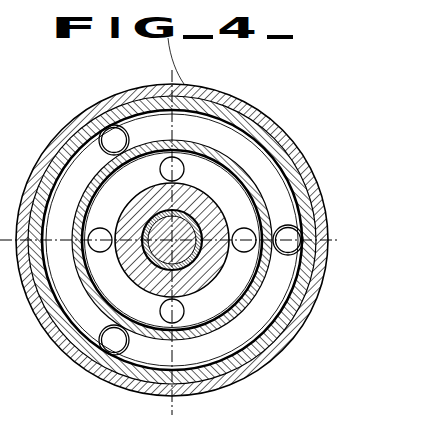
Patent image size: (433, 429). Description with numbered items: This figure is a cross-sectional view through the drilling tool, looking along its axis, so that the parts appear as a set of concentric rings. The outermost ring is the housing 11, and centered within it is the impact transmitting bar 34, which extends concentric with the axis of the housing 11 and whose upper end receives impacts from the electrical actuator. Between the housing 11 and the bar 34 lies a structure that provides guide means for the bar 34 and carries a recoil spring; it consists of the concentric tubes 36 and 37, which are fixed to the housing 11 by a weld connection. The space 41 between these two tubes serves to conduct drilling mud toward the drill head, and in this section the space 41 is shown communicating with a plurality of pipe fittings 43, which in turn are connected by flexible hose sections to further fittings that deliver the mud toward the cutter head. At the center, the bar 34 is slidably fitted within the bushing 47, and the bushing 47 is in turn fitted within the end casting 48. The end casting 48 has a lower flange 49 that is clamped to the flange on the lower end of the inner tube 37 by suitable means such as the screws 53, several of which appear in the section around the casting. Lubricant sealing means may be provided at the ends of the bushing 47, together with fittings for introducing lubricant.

The housing 11 is at (263, 123).
The impact transmitting bar 34 is at (163, 220).
The tube 36 is at (302, 200).
The tube 37 is at (263, 287).
The space 41 is at (293, 263).
The pipe fittings 43 is at (295, 237).
The bushing 47 is at (187, 267).
The end casting 48 is at (128, 215).
The lower flange 49 is at (227, 187).
The screws 53 is at (245, 230).